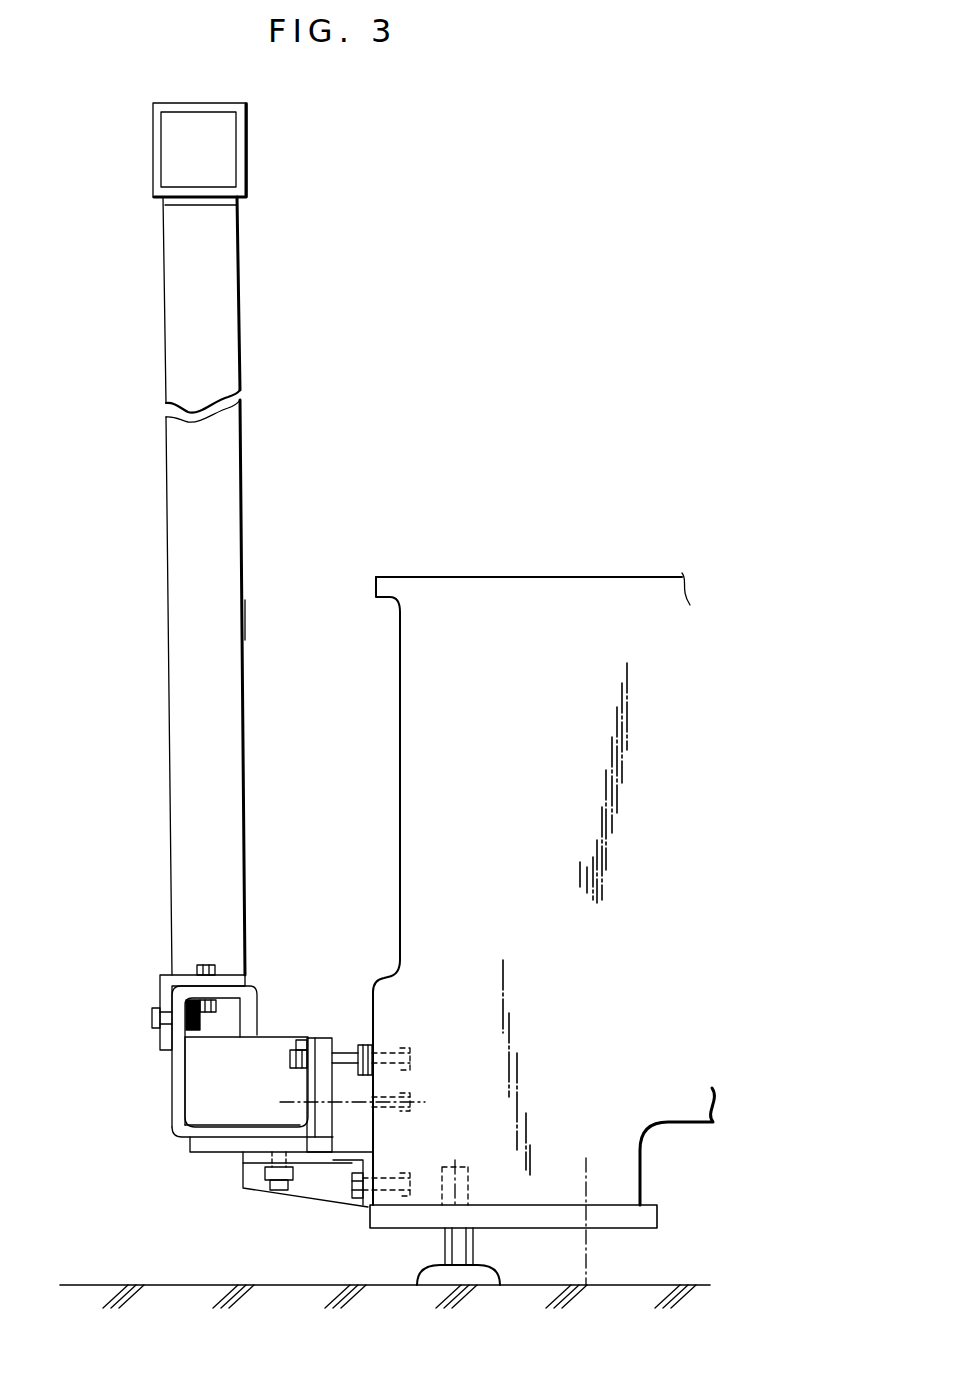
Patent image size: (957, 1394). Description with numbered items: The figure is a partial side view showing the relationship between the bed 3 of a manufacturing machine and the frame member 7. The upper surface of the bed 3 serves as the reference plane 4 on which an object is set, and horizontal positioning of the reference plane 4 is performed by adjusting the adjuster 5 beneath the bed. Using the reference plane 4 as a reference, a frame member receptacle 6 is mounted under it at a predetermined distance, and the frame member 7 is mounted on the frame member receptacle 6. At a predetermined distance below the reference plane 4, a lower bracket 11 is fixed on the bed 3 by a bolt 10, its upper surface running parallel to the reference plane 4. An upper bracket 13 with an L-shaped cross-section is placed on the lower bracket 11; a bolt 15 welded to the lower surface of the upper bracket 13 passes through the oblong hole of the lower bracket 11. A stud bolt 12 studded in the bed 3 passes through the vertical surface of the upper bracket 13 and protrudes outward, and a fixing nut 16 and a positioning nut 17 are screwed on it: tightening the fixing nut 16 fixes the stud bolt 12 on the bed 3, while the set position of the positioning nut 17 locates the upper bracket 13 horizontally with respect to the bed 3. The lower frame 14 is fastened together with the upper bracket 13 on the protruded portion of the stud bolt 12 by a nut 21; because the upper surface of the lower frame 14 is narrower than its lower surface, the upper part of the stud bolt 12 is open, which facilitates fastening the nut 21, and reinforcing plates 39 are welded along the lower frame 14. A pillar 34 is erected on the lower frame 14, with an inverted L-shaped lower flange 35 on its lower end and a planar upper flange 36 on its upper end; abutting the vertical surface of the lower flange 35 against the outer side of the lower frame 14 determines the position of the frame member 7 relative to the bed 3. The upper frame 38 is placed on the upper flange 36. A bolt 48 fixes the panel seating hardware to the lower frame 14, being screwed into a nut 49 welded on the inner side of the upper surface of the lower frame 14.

The bed 3 is at (438, 650).
The reference plane 4 is at (620, 577).
The adjuster 5 is at (425, 1275).
The frame member receptacle 6 is at (233, 1175).
The frame member 7 is at (247, 614).
The bolts 10 is at (405, 1175).
The lower bracket 11 is at (250, 1195).
The stud bolt 12 is at (400, 1048).
The upper bracket 13 is at (203, 1155).
The lower frame 14 is at (178, 1097).
The bolt 15 is at (281, 1192).
The fixing nut 16 is at (360, 1048).
The positioning nut 17 is at (338, 1048).
The nut 21 is at (300, 1048).
The pillar 34 is at (168, 733).
The lower flange 35 is at (160, 980).
The upper flange 36 is at (223, 207).
The upper frame 38 is at (238, 153).
The reinforcing plate 39 is at (205, 1077).
The bolt 48 is at (207, 963).
The nut 49 is at (215, 1010).